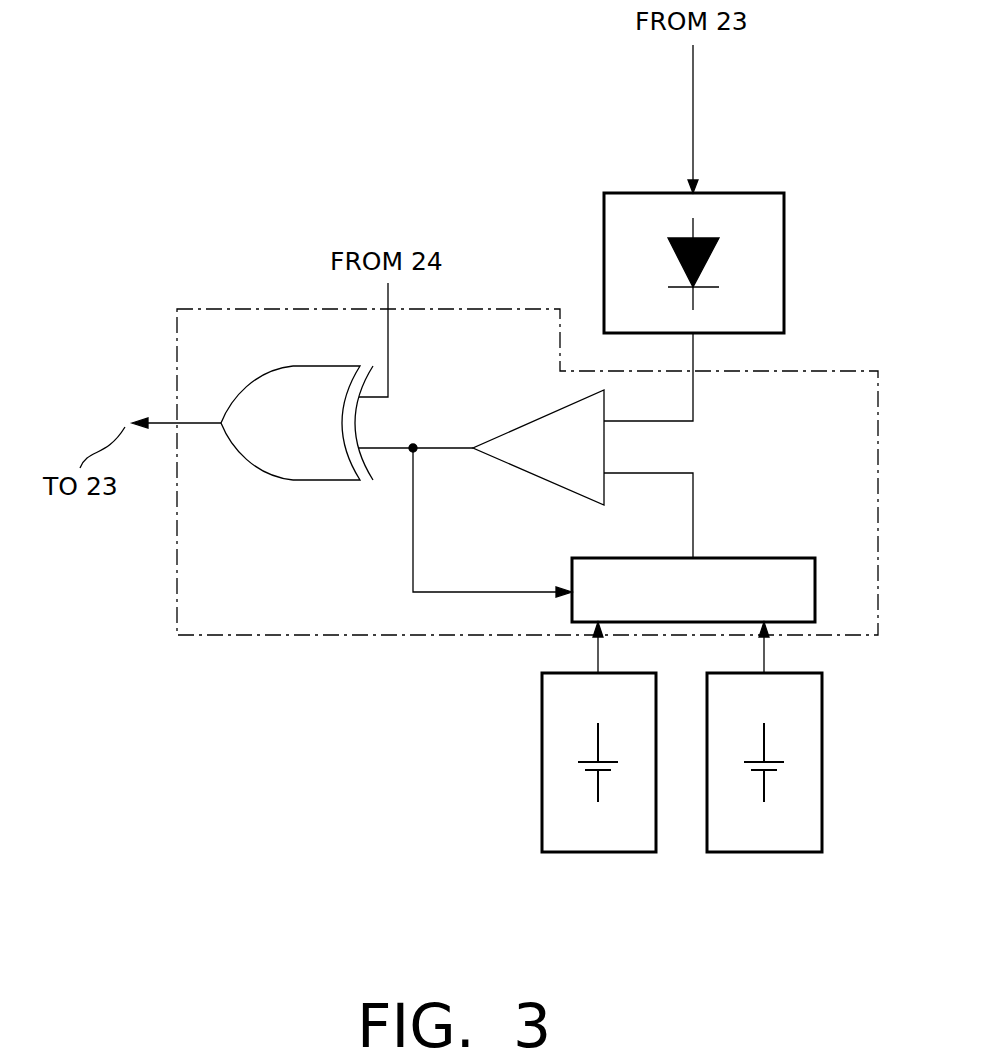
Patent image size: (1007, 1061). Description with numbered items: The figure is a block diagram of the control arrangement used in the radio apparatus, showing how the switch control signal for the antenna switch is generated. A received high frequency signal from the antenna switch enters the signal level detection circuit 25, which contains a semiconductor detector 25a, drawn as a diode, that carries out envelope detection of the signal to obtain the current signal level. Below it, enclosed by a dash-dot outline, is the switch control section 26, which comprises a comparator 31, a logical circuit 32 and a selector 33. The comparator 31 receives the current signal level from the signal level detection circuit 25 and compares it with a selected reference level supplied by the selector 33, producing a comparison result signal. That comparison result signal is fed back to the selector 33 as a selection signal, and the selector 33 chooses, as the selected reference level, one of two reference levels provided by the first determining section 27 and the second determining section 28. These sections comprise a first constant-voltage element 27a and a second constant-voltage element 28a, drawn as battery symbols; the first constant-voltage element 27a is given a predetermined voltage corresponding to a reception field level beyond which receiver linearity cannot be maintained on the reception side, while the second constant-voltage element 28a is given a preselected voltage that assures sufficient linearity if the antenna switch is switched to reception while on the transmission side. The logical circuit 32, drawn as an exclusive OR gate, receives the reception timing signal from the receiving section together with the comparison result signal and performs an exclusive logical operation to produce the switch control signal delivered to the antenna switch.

The signal level detection circuit 25 is at (736, 227).
The semiconductor detector 25a is at (718, 243).
The switch control section 26 is at (841, 368).
The first determining section 27 is at (555, 771).
The first constant-voltage element 27a is at (598, 745).
The second determining section 28 is at (800, 771).
The second constant-voltage element 28a is at (766, 742).
The comparator 31 is at (606, 447).
The logical circuit 32 is at (258, 381).
The selector 33 is at (760, 557).